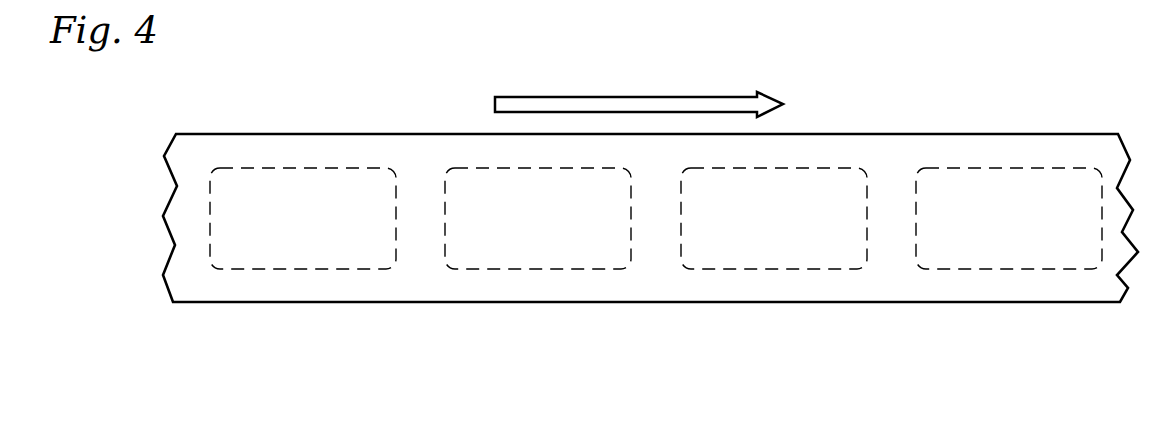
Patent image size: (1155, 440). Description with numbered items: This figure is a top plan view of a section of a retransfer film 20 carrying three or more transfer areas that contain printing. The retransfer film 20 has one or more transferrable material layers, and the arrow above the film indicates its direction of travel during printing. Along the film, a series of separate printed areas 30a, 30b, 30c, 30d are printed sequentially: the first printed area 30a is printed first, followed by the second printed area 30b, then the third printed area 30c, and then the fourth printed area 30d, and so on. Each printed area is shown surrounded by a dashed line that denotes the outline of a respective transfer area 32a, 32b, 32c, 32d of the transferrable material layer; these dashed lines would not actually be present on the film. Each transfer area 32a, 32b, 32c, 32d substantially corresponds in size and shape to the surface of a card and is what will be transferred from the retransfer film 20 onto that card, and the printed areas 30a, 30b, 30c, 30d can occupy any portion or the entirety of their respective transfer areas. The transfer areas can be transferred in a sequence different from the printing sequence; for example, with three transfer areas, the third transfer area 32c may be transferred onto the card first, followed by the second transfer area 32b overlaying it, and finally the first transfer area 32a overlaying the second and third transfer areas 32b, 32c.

The retransfer film 20 is at (1012, 113).
The first printed area 30a is at (1026, 239).
The second printed area 30b is at (790, 239).
The third printed area 30c is at (555, 239).
The fourth printed area 30d is at (320, 239).
The first transfer area 32a is at (1009, 269).
The second transfer area 32b is at (773, 269).
The third transfer area 32c is at (538, 269).
The fourth transfer area 32d is at (303, 269).